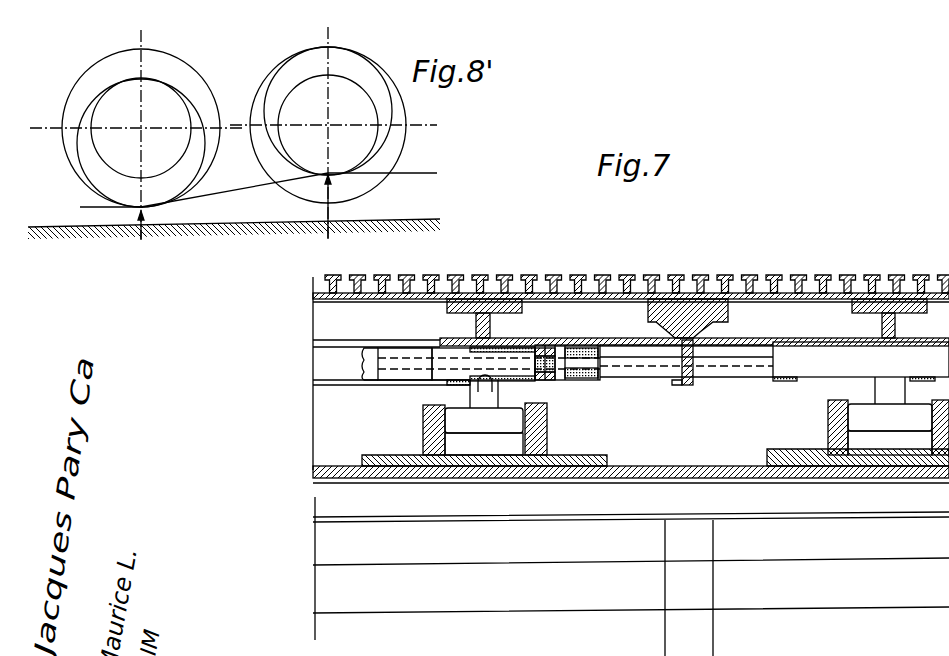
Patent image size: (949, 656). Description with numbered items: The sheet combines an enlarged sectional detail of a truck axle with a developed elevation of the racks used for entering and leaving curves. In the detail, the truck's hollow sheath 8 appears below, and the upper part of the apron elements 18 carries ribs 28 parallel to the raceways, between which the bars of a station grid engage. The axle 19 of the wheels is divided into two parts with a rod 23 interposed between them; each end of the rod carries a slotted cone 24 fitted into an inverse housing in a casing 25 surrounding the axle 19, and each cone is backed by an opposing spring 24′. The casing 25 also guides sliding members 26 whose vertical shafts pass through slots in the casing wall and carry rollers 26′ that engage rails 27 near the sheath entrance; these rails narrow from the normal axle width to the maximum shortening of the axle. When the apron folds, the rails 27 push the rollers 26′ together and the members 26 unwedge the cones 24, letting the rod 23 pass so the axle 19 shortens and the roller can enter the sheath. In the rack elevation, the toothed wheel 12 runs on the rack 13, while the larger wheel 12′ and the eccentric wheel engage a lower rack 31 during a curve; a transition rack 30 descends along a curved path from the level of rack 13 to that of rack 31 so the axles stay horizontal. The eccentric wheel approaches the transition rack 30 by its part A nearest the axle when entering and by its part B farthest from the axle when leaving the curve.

In FIG. 7, the hollow body or sheath 8 is at (631, 570).
In FIG. 8′, the toothed wheel 12 is at (92, 118).
In FIG. 8′, the rack wheel 12′ is at (78, 157).
In FIG. 8′, the rack 13 is at (404, 176).
In FIG. 7, the apron element 18 is at (736, 283).
In FIG. 7, the axle 19 is at (398, 364).
In FIG. 7, the rod 23 is at (657, 361).
In FIG. 7, the slotted cone 24 is at (566, 346).
In FIG. 7, the opposing spring 24′ is at (580, 381).
In FIG. 7, the casing 25 is at (541, 376).
In FIG. 7, the sliding member 26 is at (482, 362).
In FIG. 7, the roller 26′ is at (492, 422).
In FIG. 7, the rail 27 is at (540, 443).
In FIG. 7, the rib 28 is at (362, 279).
In FIG. 8′, the transition rack 30 is at (240, 194).
In FIG. 8′, the lower rack 31 is at (88, 209).
In FIG. 8′, the part nearest the axle A is at (336, 193).
In FIG. 8′, the part farthest from the axle B is at (150, 211).